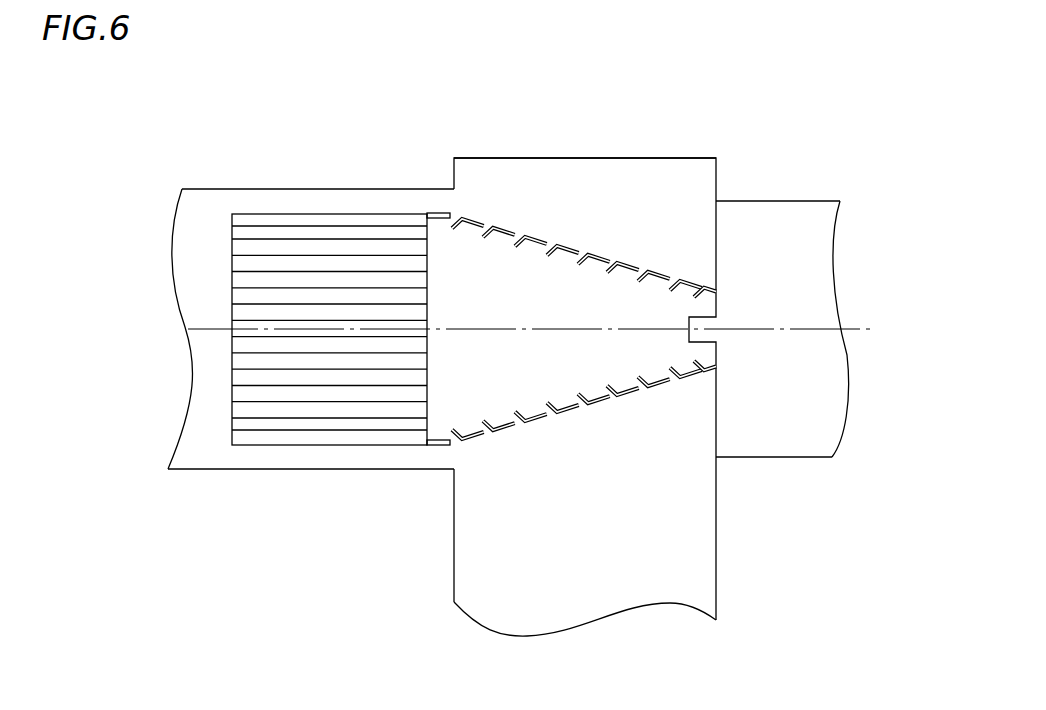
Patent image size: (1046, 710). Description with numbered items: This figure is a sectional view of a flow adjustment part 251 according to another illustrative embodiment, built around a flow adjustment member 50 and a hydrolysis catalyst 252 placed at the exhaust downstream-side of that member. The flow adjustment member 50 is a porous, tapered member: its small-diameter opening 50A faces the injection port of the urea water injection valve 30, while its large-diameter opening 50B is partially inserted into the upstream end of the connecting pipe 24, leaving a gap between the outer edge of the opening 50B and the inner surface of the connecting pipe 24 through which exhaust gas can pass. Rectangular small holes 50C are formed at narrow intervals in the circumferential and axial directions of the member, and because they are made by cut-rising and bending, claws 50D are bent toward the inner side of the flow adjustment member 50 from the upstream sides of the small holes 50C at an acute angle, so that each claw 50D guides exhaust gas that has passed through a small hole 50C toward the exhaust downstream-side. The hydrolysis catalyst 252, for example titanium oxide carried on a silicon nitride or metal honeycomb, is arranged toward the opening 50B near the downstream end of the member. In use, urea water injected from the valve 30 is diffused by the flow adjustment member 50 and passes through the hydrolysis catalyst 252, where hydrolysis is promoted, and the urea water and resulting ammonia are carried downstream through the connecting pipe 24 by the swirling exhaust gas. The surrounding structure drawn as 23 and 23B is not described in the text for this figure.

The holder 23 is at (602, 364).
The upper wall of holder 23B is at (637, 158).
The connecting pipe 24 is at (362, 470).
The urea water injection valve 30 is at (716, 298).
The flow adjustment member 50 is at (606, 300).
The small-diameter opening 50A is at (713, 352).
The large-diameter opening 50B is at (437, 229).
The small holes 50C is at (530, 237).
The claws 50D is at (590, 255).
The flow adjustment part 251 is at (436, 213).
The hydrolysis catalyst 252 is at (318, 213).